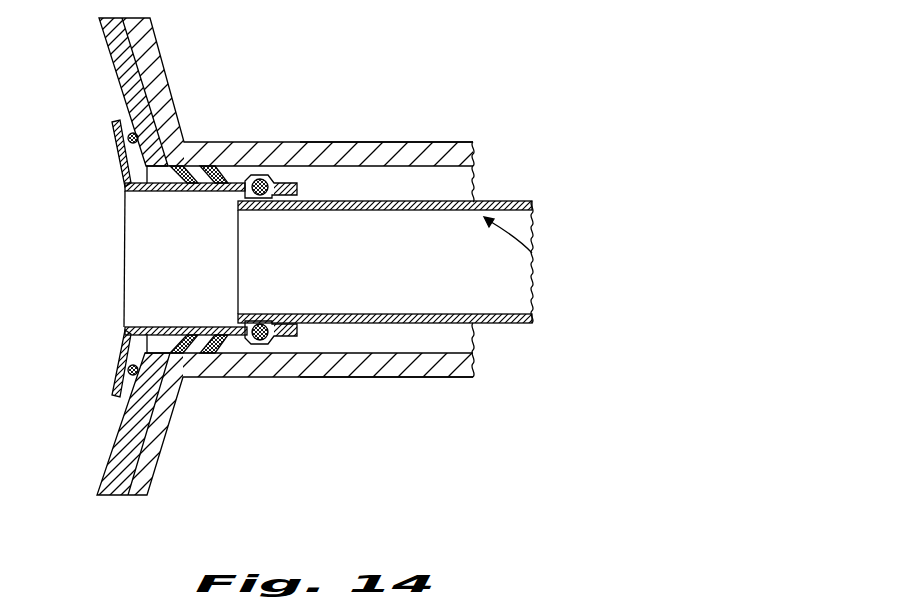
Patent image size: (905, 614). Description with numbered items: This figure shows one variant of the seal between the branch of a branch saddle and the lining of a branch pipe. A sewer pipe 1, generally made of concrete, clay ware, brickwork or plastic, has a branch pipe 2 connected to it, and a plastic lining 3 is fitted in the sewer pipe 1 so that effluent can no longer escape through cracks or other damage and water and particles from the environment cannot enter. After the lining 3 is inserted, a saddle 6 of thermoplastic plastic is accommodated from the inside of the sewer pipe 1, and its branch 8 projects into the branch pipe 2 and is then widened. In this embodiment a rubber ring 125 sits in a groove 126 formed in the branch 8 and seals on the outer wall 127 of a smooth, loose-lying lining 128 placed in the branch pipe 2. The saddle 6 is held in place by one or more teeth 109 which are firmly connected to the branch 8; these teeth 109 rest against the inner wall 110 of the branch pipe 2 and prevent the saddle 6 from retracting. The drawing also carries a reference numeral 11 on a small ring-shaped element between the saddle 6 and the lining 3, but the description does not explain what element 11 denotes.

The sewer pipe 1 is at (157, 53).
The branch pipe 2 is at (475, 152).
The plastic lining 3 is at (122, 60).
The saddle 6 is at (122, 170).
The branch 8 is at (172, 192).
The sealing ring 11 is at (127, 127).
The teeth 109 is at (213, 170).
The inner wall 110 is at (406, 176).
The rubber ring 125 is at (265, 178).
The groove 126 is at (263, 346).
The outer wall 127 is at (498, 202).
The lining 128 is at (532, 253).